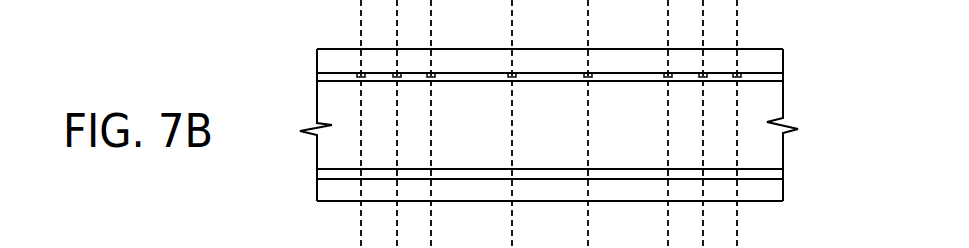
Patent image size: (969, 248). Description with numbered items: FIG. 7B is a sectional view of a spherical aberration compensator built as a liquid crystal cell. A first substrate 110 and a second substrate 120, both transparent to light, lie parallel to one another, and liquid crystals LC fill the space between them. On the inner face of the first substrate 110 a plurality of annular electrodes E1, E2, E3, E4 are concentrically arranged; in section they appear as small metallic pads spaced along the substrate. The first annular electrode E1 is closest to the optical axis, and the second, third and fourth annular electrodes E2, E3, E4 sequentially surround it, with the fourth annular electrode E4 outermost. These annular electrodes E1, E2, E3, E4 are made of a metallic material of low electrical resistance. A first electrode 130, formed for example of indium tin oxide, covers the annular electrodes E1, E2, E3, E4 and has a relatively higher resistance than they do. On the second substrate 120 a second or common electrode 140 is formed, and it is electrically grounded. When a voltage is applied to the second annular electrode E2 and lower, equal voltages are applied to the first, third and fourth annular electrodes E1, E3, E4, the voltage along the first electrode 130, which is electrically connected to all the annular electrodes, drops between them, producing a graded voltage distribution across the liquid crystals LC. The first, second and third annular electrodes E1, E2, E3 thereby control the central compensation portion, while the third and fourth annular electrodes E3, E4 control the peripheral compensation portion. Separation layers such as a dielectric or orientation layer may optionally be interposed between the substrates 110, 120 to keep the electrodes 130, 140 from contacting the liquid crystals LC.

The first substrate 110 is at (777, 59).
The first electrode 130 is at (777, 77).
The second or common electrode 140 is at (778, 173).
The second substrate 120 is at (778, 190).
The first annular electrode E1 is at (588, 71).
The second annular electrode E2 is at (668, 71).
The third annular electrode E3 is at (703, 71).
The fourth annular electrode E4 is at (737, 71).
The liquid crystals LC is at (648, 131).